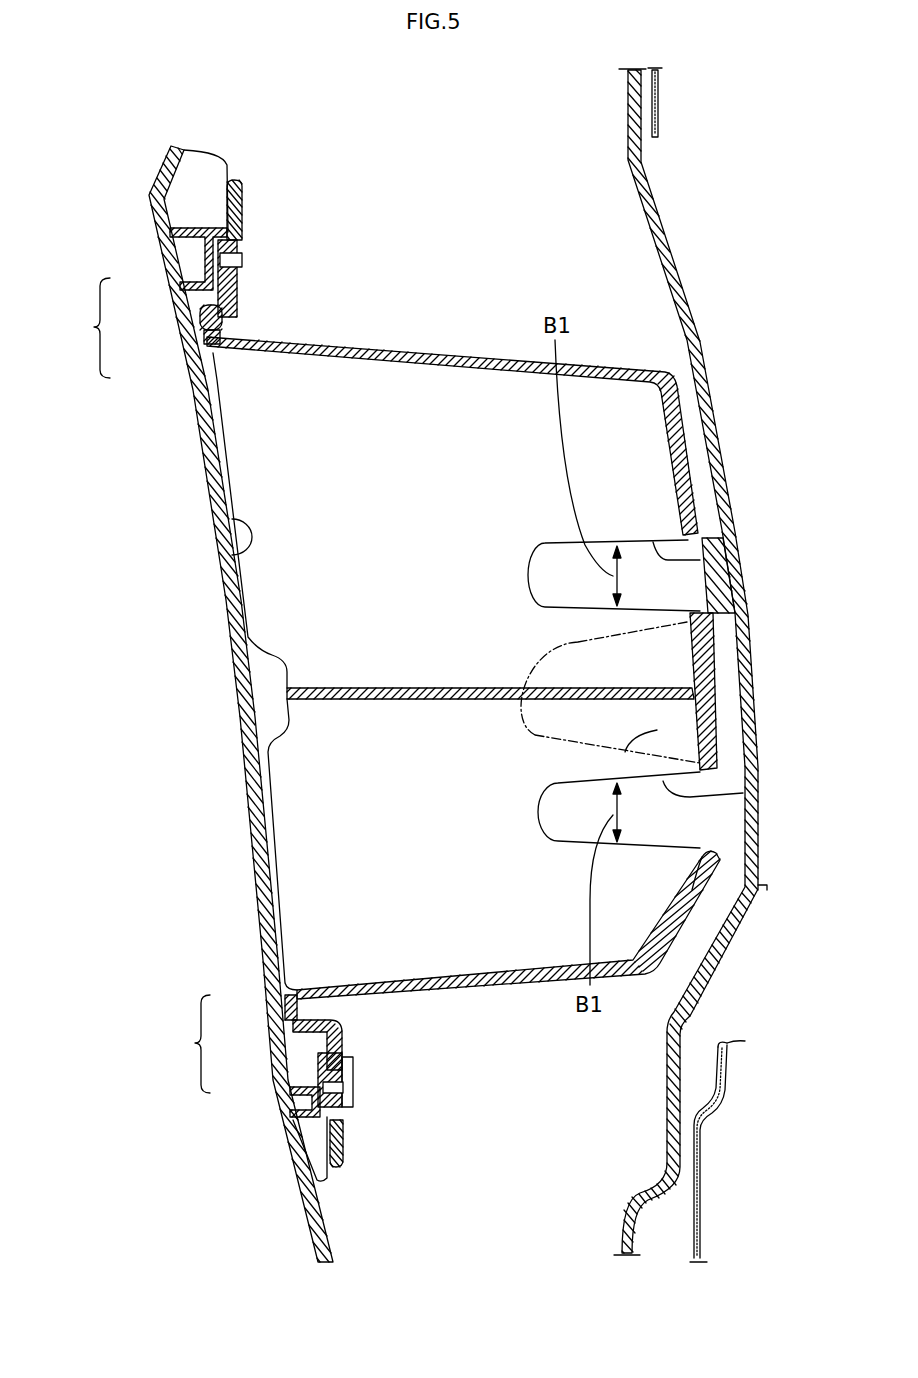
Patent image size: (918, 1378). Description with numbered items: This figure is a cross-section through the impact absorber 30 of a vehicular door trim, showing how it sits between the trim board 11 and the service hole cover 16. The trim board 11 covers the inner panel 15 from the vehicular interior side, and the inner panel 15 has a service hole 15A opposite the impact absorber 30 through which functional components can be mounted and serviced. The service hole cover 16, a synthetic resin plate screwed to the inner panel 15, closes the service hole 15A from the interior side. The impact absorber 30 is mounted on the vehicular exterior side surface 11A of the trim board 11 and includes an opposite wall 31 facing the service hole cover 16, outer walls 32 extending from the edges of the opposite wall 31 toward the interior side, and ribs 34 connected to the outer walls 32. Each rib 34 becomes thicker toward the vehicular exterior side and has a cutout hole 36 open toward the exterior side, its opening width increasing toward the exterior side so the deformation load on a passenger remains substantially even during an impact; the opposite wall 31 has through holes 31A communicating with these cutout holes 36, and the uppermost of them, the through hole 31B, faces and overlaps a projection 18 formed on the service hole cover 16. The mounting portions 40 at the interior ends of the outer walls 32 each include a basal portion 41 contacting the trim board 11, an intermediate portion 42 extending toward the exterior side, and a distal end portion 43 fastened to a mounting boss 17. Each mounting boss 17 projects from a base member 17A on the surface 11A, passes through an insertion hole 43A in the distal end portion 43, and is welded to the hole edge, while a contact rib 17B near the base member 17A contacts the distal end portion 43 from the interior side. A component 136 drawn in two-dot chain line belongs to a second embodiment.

The trim board 11 is at (215, 467).
The vehicular exterior side surface 11A is at (243, 551).
The inner panel 15 is at (698, 1190).
The service hole 15A is at (745, 1041).
The service hole cover 16 is at (757, 854).
The mounting boss 17 is at (243, 263).
The base member 17A is at (213, 247).
The contact rib 17B is at (188, 182).
The projection 18 is at (722, 577).
The impact absorber 30 is at (508, 325).
The opposite wall 31 is at (685, 463).
The through hole 31A is at (712, 850).
The through hole 31B is at (707, 598).
The outer wall 32 is at (437, 360).
The rib 34 is at (598, 413).
The cutout hole 36 is at (690, 547).
The component 136 is at (705, 736).
The mounting portion 40 is at (138, 685).
The basal portion 41 is at (223, 340).
The intermediate portion 42 is at (217, 308).
The distal end portion 43 is at (227, 300).
The insertion hole 43A is at (240, 263).